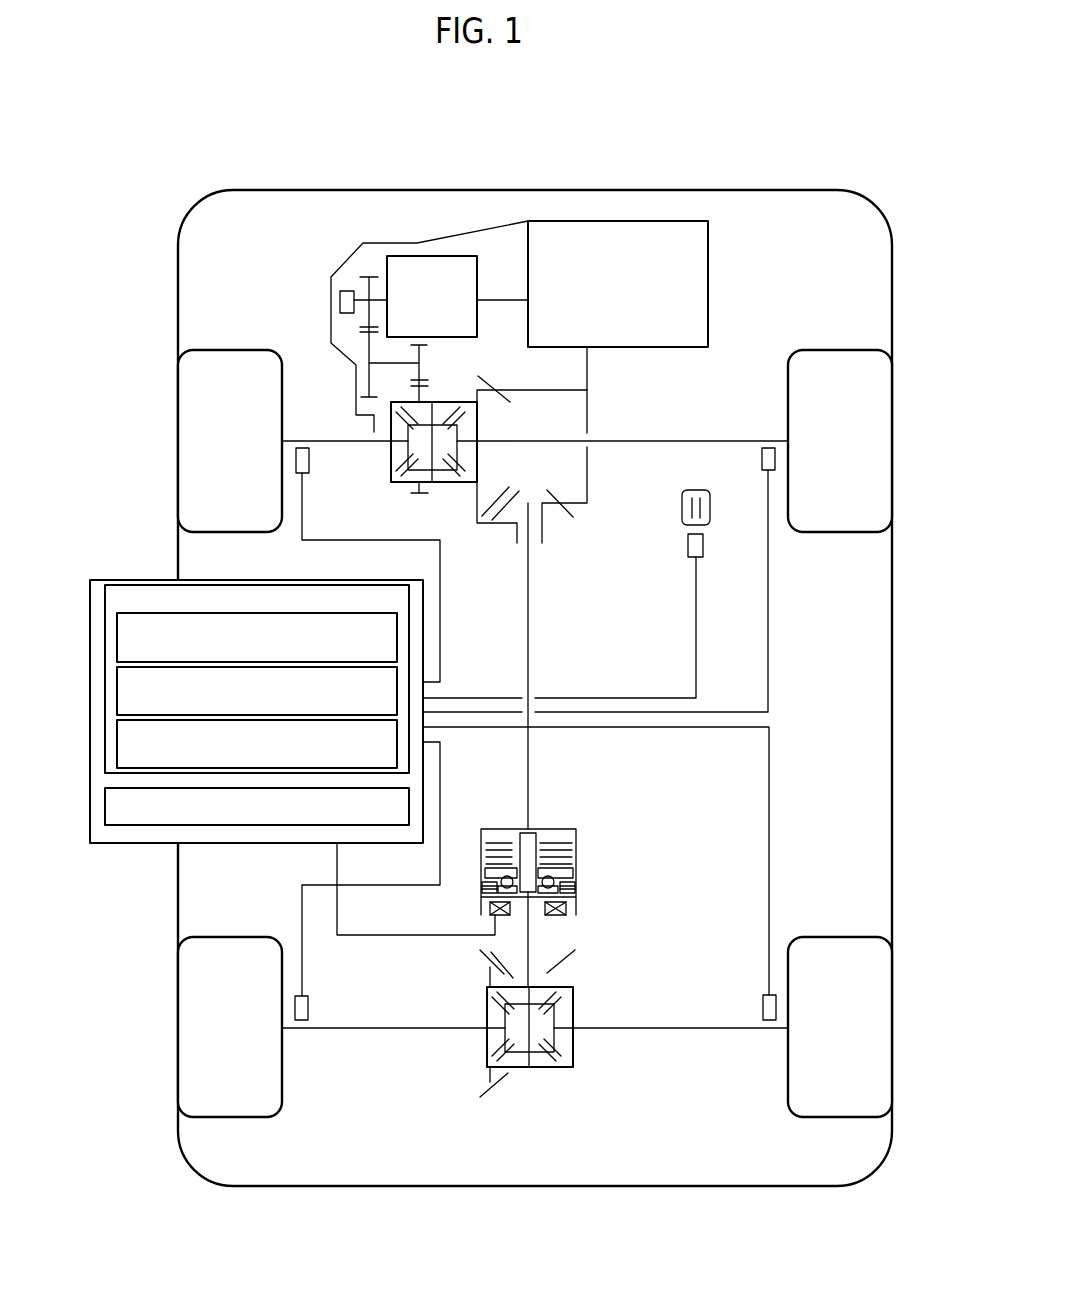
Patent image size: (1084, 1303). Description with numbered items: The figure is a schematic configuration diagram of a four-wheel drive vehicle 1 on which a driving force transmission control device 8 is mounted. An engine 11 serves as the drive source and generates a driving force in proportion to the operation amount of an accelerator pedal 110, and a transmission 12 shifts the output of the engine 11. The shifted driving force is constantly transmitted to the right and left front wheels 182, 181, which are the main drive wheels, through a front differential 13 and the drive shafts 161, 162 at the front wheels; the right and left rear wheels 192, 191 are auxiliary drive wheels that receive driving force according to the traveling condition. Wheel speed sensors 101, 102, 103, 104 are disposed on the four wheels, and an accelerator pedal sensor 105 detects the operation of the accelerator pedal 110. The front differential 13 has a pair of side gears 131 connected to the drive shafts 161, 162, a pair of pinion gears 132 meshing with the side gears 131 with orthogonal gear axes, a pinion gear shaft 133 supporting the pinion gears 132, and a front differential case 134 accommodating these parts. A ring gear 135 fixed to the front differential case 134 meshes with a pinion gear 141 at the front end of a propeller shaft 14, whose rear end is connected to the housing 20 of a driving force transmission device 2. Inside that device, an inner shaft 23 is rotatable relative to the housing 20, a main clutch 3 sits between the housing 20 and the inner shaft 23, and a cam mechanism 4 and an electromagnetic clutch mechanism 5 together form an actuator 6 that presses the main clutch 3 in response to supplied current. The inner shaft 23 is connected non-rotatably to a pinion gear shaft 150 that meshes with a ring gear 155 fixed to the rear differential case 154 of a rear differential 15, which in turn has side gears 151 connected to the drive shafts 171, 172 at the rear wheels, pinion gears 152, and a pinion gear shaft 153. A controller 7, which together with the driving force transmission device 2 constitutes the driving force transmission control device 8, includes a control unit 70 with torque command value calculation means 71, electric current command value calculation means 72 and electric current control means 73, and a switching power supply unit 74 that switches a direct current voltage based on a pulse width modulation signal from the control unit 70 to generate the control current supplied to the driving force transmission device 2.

The four-wheel drive vehicle 1 is at (819, 140).
The driving force transmission device 2 is at (550, 843).
The main clutch 3 is at (568, 845).
The cam mechanism 4 is at (567, 872).
The electromagnetic clutch mechanism 5 is at (575, 892).
The actuator 6 is at (617, 843).
The controller 7 is at (424, 778).
The driving force transmission control device 8 is at (597, 745).
The engine 11 is at (652, 220).
The transmission 12 is at (422, 256).
The front differential 13 is at (397, 496).
The propeller shaft 14 is at (530, 632).
The rear differential 15 is at (593, 1064).
The housing 20 is at (490, 828).
The inner shaft 23 is at (524, 836).
The control unit 70 is at (105, 605).
The torque command value calculation means 71 is at (117, 640).
The electric current command value calculation means 72 is at (117, 693).
The electric current control means 73 is at (117, 745).
The switching power supply unit 74 is at (105, 803).
The wheel speed sensor 101 is at (302, 448).
The wheel speed sensor 102 is at (767, 448).
The wheel speed sensor 103 is at (309, 1000).
The wheel speed sensor 104 is at (762, 1000).
The accelerator pedal sensor 105 is at (688, 550).
The accelerator pedal 110 is at (695, 489).
The side gear 131 is at (417, 455).
The pinion gear 132 is at (438, 420).
The pinion gear shaft 133 is at (428, 440).
The front differential case 134 is at (400, 400).
The ring gear 135 is at (498, 398).
The pinion gear 141 is at (567, 507).
The pinion gear shaft 150 is at (529, 938).
The side gear 151 is at (553, 1015).
The pinion gear 152 is at (542, 1000).
The pinion gear shaft 153 is at (527, 1025).
The rear differential case 154 is at (555, 1068).
The ring gear 155 is at (483, 963).
The drive shaft 161 is at (347, 440).
The drive shaft 162 is at (637, 440).
The drive shaft 171 is at (399, 1030).
The drive shaft 172 is at (722, 1030).
The left front wheel 181 is at (193, 415).
The right front wheel 182 is at (878, 415).
The left rear wheel 191 is at (192, 1048).
The right rear wheel 192 is at (880, 1048).